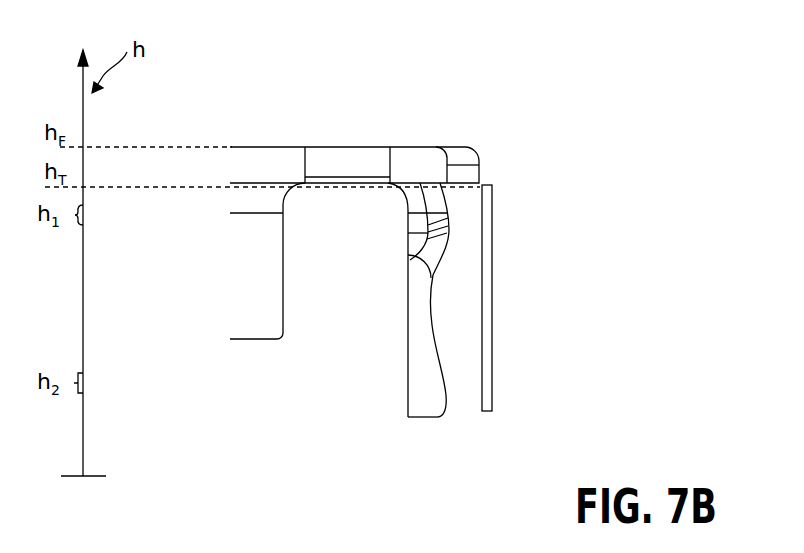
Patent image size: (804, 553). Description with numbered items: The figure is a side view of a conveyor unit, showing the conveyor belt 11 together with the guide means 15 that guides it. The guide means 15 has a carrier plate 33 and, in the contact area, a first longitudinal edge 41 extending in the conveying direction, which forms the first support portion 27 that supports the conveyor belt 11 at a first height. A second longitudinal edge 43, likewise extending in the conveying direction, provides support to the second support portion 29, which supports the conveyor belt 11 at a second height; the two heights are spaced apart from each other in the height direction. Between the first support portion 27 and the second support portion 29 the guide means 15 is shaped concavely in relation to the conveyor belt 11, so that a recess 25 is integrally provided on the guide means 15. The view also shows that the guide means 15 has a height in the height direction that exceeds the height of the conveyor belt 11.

The conveyor belt 11 is at (493, 323).
The guide means 15 is at (376, 130).
The recess 25 is at (437, 310).
The first support portion 27 is at (448, 217).
The second support portion 29 is at (447, 399).
The carrier plate 33 is at (410, 160).
The first longitudinal edge 41 is at (405, 188).
The second longitudinal edge 43 is at (423, 410).